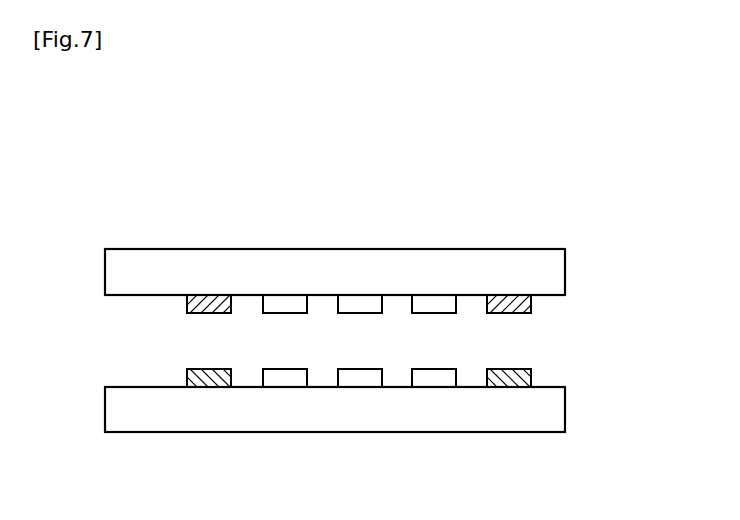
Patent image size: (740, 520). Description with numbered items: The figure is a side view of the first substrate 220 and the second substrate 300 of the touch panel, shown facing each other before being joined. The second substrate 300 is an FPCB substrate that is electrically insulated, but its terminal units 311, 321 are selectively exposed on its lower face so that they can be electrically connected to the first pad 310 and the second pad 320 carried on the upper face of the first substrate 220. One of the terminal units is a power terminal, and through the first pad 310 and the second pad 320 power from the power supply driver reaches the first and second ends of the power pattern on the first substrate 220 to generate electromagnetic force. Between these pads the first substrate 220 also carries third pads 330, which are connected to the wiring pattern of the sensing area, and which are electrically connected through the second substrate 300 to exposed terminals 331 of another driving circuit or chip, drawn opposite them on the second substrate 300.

The second substrate 300 is at (548, 270).
The first substrate 220 is at (557, 412).
The terminal unit 311 is at (185, 302).
The terminal unit 321 is at (537, 303).
The exposed terminal 331 is at (435, 302).
The first pad 310 is at (185, 370).
The second pad 320 is at (527, 373).
The third pad 330 is at (435, 380).